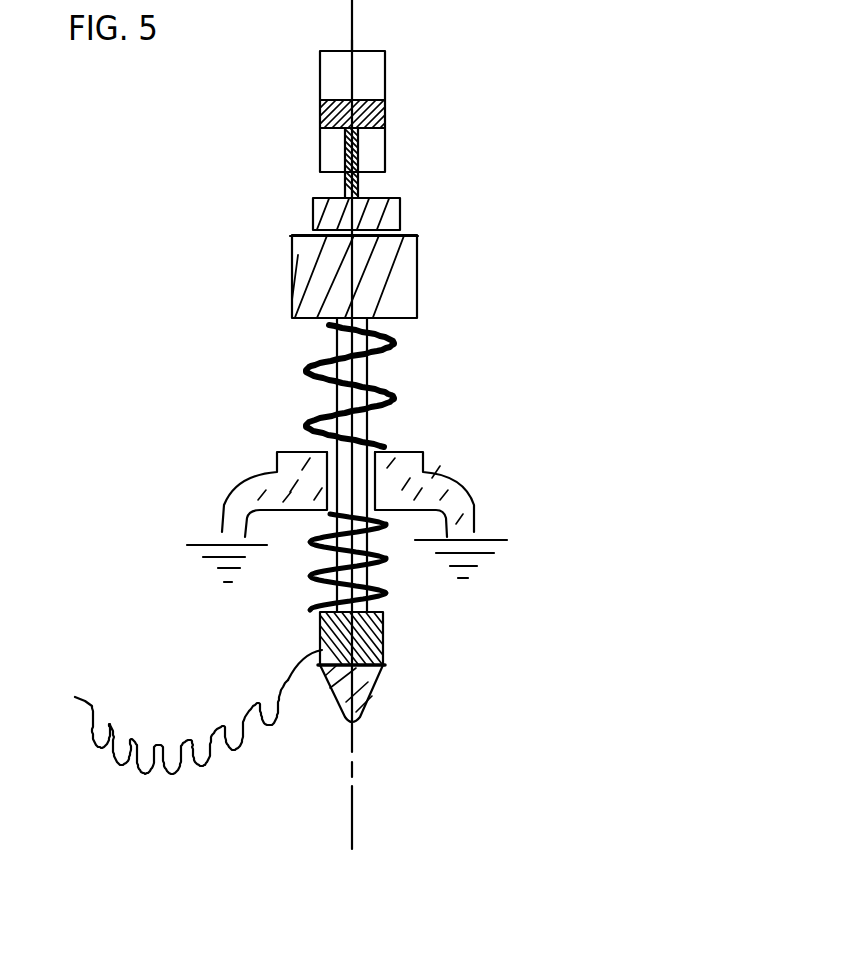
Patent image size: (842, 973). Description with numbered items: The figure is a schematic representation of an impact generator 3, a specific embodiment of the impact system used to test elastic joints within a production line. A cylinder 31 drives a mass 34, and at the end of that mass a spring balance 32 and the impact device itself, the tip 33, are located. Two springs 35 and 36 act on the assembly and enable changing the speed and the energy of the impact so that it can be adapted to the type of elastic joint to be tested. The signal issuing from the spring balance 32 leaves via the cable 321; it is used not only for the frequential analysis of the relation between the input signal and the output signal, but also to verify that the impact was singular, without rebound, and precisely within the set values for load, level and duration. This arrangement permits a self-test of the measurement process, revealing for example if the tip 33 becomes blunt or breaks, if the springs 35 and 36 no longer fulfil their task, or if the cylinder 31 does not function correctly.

The impact generator 3 is at (527, 127).
The cylinder 31 is at (315, 79).
The spring balance 32 is at (320, 632).
The cable 321 is at (150, 782).
The impact device 33 is at (383, 700).
The mass 34 is at (290, 270).
The spring 35 is at (427, 386).
The spring 36 is at (398, 588).